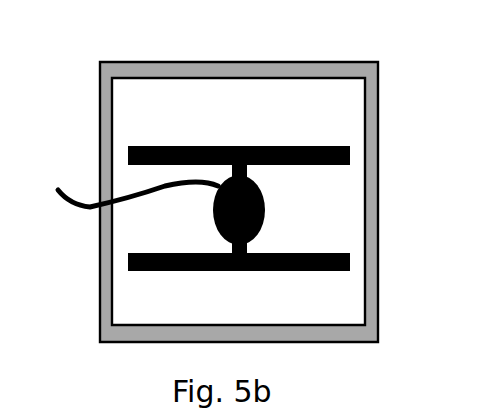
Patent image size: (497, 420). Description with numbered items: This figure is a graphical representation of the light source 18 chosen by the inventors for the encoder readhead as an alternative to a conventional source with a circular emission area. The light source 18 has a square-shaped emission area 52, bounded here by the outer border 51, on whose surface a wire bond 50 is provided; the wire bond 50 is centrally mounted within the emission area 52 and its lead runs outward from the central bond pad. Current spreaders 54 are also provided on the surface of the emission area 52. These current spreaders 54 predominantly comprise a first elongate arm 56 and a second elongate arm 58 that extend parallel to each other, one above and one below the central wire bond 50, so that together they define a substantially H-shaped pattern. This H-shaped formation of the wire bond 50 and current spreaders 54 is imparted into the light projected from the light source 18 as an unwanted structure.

The light source 18 is at (78, 86).
The housing wall 51 is at (143, 61).
The current spreaders 54 is at (323, 124).
The first elongate arm 56 is at (273, 148).
The second elongate arm 58 is at (318, 273).
The emission area 52 is at (326, 229).
The wire bond 50 is at (215, 212).